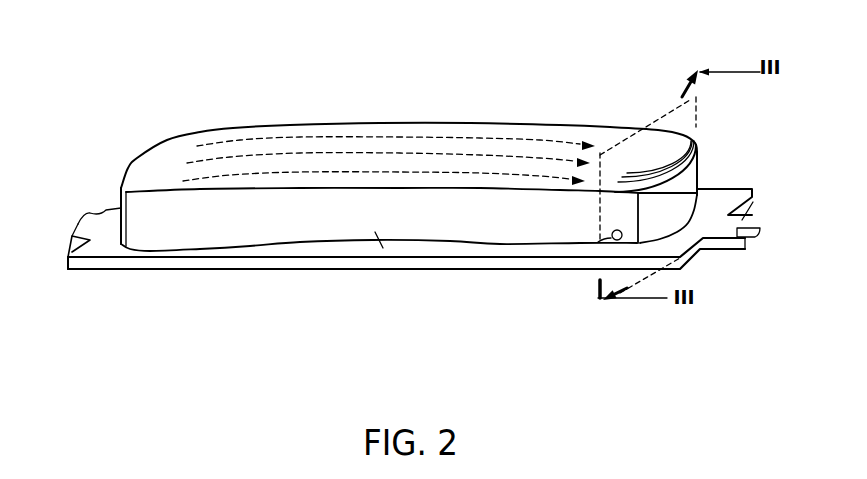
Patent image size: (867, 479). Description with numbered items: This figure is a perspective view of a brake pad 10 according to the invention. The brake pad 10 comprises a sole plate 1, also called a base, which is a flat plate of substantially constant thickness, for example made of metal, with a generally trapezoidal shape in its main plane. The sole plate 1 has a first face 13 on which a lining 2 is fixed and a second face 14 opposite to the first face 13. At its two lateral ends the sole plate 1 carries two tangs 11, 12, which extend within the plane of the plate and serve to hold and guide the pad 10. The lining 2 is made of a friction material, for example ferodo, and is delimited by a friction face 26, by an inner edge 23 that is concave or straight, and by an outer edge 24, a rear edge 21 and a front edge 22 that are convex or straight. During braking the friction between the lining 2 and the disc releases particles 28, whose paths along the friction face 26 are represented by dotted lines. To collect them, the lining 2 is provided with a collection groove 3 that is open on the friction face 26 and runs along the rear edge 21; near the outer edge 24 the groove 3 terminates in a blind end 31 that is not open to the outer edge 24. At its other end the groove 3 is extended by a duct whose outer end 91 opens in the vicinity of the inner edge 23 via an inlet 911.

The brake pad 10 is at (155, 101).
The sole plate 1 is at (183, 266).
The tang 11 is at (752, 204).
The tang 12 is at (88, 212).
The first face 13 is at (375, 232).
The second face 14 is at (487, 273).
The lining 2 is at (502, 124).
The rear edge 21 is at (673, 202).
The front edge 22 is at (118, 205).
The inner edge 23 is at (347, 222).
The outer edge 24 is at (443, 123).
The friction face 26 is at (398, 143).
The particles 28 is at (315, 150).
The collection groove 3 is at (660, 133).
The blind end 31 is at (677, 112).
The outer end of the duct 91 is at (612, 233).
The inlet 911 is at (598, 242).